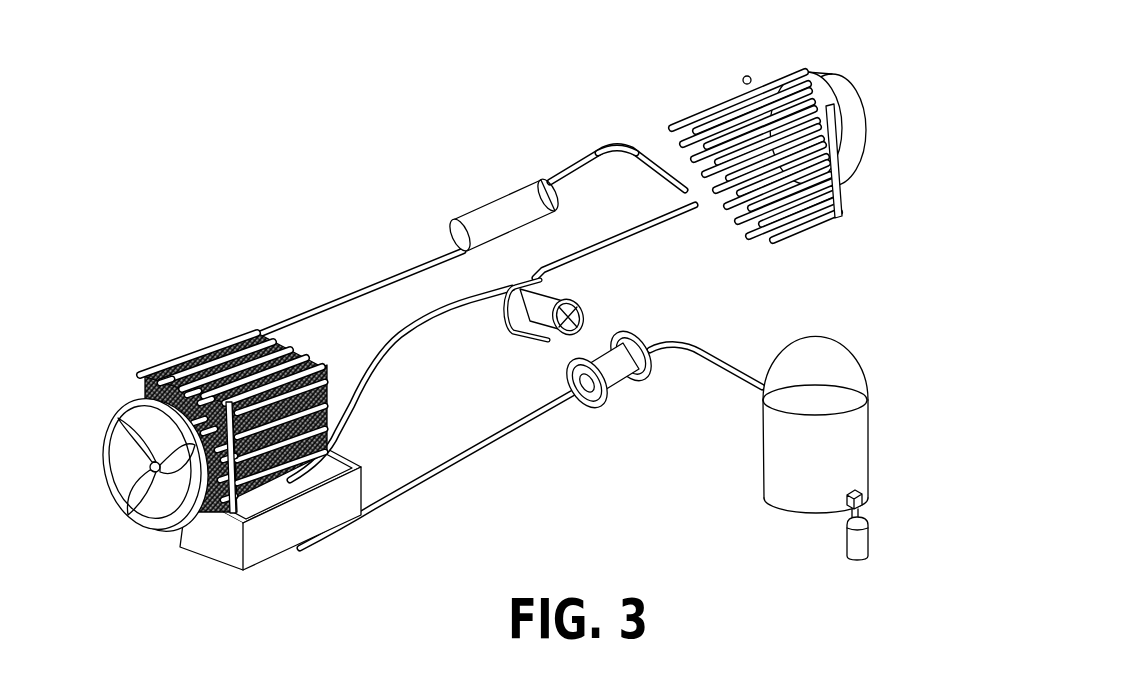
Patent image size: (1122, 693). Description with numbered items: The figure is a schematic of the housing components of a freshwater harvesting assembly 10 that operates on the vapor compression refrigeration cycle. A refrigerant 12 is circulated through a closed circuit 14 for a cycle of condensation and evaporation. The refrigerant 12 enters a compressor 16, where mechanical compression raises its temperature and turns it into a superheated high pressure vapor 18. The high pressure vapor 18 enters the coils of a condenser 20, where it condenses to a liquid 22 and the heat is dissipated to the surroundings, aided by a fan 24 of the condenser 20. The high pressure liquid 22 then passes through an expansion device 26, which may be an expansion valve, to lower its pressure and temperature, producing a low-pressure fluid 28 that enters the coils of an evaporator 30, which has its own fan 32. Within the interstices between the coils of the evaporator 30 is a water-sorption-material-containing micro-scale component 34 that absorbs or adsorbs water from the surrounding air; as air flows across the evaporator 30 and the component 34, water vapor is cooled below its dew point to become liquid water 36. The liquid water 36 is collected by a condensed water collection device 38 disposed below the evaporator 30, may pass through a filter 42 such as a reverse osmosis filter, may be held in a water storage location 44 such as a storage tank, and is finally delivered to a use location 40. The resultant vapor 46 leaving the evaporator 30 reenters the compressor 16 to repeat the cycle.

The freshwater harvesting assembly 10 is at (308, 137).
The refrigerant 12 is at (478, 292).
The closed circuit 14 is at (560, 164).
The compressor 16 is at (577, 290).
The high pressure vapor 18 is at (672, 228).
The condenser 20 is at (757, 120).
The liquid 22 is at (612, 135).
The fan 24 is at (795, 76).
The expansion device 26 is at (490, 203).
The low-pressure fluid 28 is at (348, 300).
The evaporator 30 is at (214, 369).
The fan 32 is at (133, 460).
The water-sorption-material-containing micro-scale component 34 is at (237, 340).
The liquid water 36 is at (462, 458).
The condensed water collection device 38 is at (307, 543).
The use location 40 is at (868, 540).
The filter 42 is at (617, 380).
The water storage location 44 is at (827, 353).
The resultant vapor 46 is at (375, 377).